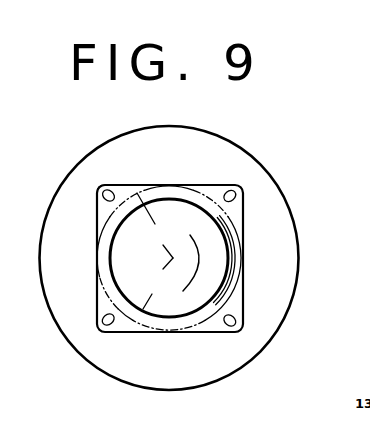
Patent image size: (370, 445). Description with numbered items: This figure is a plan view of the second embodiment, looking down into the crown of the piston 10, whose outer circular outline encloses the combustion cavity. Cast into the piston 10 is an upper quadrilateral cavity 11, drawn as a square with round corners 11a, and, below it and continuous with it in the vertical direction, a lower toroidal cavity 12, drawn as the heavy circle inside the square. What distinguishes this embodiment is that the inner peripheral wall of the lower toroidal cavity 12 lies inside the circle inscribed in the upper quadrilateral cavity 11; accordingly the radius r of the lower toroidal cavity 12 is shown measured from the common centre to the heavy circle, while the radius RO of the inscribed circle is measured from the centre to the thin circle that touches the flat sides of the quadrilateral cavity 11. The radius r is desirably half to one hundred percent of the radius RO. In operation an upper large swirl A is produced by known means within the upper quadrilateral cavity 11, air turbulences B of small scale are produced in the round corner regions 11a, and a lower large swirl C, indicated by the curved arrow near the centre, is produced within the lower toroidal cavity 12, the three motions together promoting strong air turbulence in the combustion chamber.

The piston 10 is at (276, 221).
The upper quadrilateral cavity 11 is at (239, 211).
The round corners 11a is at (101, 185).
The lower toroidal cavity 12 is at (185, 200).
The upper large swirl A is at (239, 264).
The air turbulences B is at (117, 187).
The lower large swirl C is at (198, 268).
The radius of the inscribed circle RO is at (155, 225).
The inside radius of the lower toroidal cavity r is at (158, 283).